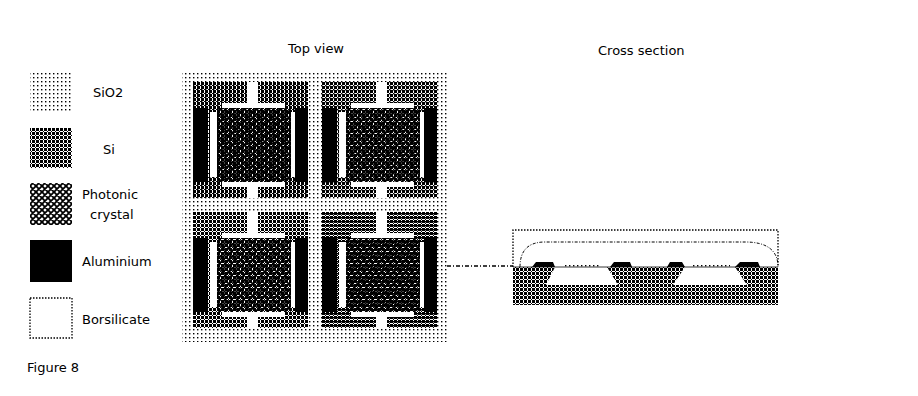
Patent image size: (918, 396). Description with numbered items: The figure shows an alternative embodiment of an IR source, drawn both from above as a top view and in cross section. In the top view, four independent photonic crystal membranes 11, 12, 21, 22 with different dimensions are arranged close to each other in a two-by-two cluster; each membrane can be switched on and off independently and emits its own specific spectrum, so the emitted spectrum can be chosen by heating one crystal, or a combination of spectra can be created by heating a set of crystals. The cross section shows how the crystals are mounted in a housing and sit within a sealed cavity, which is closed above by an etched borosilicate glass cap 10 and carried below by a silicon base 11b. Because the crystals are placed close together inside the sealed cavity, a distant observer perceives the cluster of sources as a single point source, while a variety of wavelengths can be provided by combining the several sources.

The etched Borosilicate glass cap 10 is at (778, 229).
The silicon substrate 11b is at (780, 295).
The photonic crystal membrane 11 is at (250, 140).
The photonic crystal membrane 12 is at (379, 140).
The photonic crystal membrane 21 is at (250, 270).
The photonic crystal membrane 22 is at (379, 270).